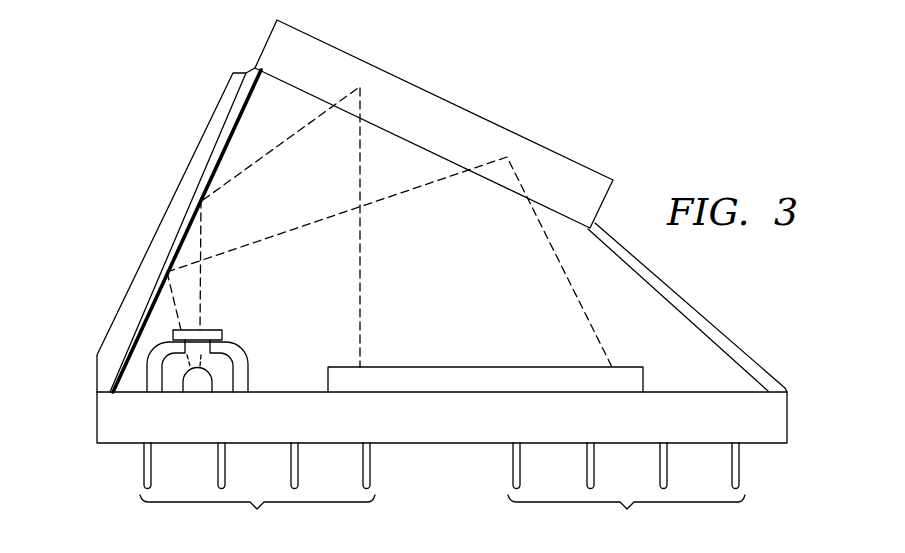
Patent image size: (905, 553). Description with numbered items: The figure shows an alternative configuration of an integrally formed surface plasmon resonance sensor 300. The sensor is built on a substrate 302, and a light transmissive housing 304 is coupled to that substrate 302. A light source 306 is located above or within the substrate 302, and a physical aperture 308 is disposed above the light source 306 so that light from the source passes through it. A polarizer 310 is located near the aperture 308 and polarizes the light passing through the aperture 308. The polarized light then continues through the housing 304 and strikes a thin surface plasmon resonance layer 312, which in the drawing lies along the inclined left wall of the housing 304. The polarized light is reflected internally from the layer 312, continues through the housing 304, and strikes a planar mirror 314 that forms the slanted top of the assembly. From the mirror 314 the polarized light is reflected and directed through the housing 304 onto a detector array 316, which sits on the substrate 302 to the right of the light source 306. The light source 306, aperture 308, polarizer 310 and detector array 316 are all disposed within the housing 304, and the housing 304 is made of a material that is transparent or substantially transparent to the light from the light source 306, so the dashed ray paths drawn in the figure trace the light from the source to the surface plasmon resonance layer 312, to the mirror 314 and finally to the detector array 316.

The integrally formed surface plasmon resonance sensor 300 is at (684, 118).
The substrate 302 is at (788, 417).
The light transmissive housing 304 is at (717, 288).
The light source 306 is at (197, 387).
The physical aperture 308 is at (228, 346).
The polarizer 310 is at (218, 328).
The thin surface plasmon resonance layer 312 is at (222, 145).
The planar mirror 314 is at (468, 84).
The detector array 316 is at (485, 365).